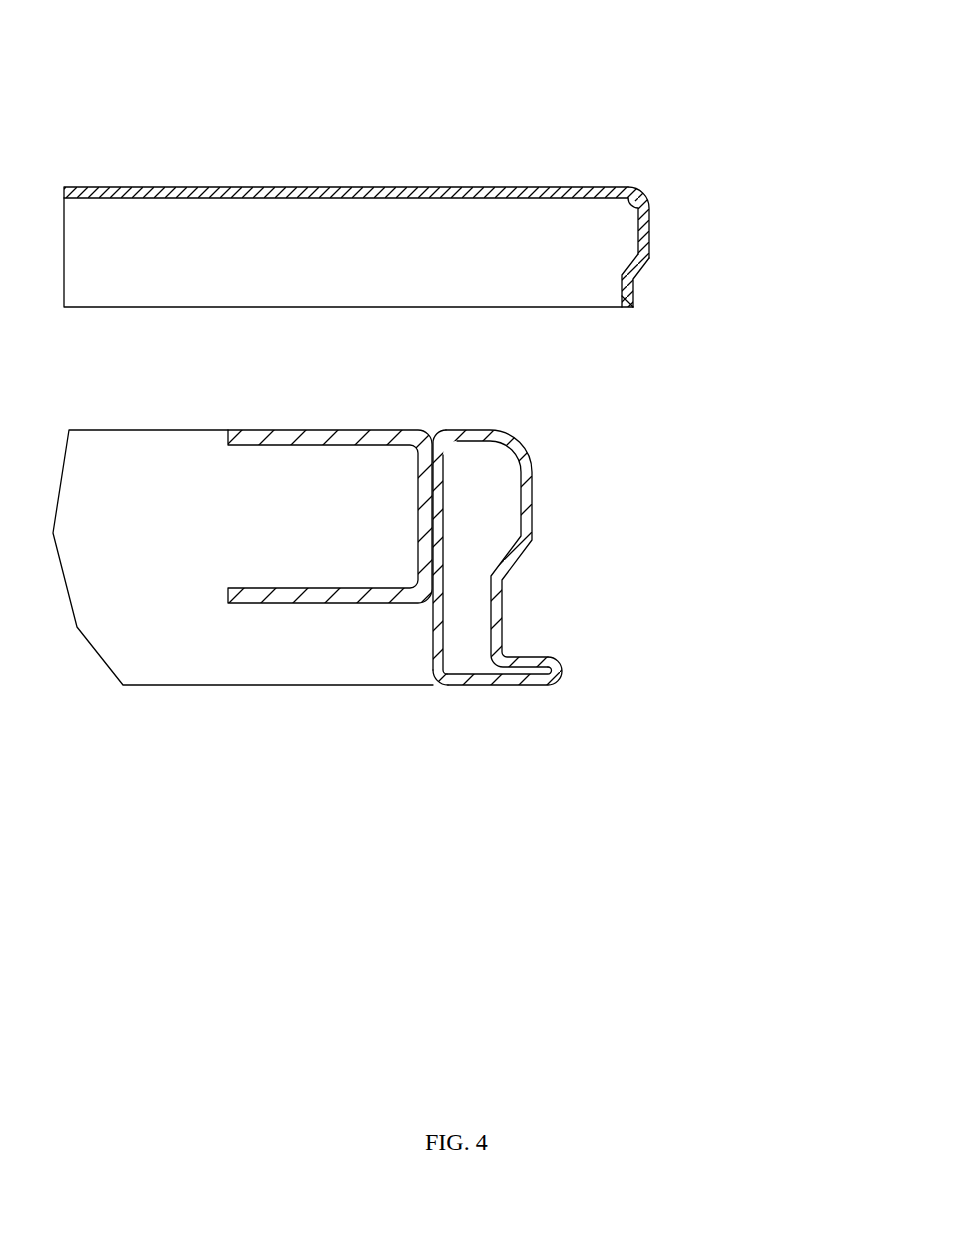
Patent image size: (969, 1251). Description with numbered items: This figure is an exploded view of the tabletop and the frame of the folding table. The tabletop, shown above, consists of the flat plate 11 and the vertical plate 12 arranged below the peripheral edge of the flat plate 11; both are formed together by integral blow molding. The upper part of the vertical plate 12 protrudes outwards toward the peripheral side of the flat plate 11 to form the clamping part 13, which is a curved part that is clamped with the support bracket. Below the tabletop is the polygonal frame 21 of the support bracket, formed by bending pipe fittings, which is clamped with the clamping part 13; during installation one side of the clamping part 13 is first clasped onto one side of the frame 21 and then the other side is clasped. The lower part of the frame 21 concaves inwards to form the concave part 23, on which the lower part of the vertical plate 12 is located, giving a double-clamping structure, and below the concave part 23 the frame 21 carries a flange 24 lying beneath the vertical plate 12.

The flat plate 11 is at (320, 193).
The vertical plate 12 is at (636, 312).
The clamping part 13 is at (651, 222).
The polygonal frame 21 is at (438, 648).
The concave part 23 is at (508, 612).
The flange 24 is at (555, 685).